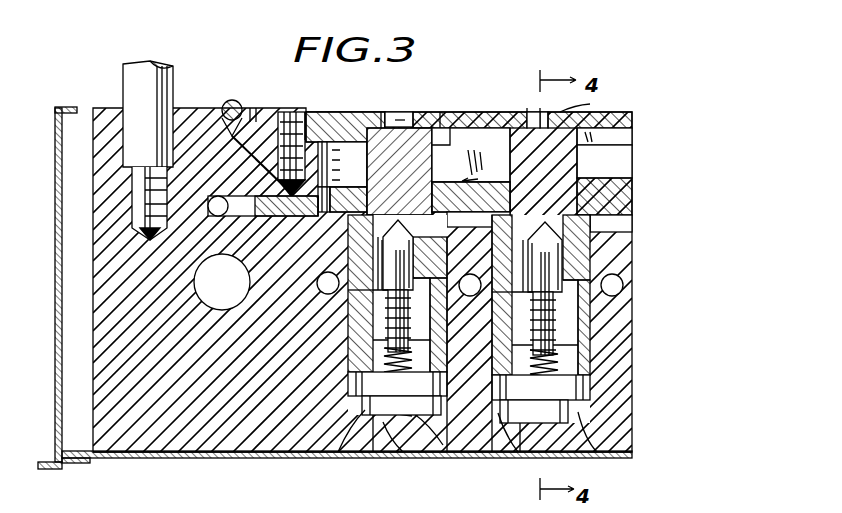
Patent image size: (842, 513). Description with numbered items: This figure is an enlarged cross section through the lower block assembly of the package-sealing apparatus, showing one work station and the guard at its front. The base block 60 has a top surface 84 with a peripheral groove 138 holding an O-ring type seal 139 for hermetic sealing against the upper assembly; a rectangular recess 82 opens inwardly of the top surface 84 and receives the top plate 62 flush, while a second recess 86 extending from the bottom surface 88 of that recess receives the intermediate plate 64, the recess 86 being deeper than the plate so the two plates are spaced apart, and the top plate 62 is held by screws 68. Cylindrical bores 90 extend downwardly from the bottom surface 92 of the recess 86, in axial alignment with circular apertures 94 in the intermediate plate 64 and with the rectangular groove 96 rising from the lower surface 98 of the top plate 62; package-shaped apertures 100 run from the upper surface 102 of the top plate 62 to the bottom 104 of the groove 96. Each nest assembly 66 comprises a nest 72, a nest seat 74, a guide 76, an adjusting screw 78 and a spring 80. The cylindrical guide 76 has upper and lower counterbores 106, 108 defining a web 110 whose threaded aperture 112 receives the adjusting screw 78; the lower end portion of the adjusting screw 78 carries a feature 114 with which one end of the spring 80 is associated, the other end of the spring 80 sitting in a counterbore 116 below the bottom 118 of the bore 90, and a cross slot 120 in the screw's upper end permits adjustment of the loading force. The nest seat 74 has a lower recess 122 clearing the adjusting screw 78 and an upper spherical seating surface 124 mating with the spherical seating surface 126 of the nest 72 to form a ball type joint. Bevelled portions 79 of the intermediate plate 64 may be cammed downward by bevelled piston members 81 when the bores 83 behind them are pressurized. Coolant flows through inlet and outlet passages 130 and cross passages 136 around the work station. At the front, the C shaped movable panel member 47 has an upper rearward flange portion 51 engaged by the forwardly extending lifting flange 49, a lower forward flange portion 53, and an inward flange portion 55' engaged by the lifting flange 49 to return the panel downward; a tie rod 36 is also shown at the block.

The tie rod 36 is at (134, 96).
The movable panel member 47 is at (56, 288).
The lifting flange 49 is at (156, 459).
The flange portion 51 is at (72, 114).
The flange portion 53 is at (44, 470).
The flange portion 55' is at (94, 480).
The base block 60 is at (280, 455).
The top plate 62 is at (310, 114).
The intermediate plate 64 is at (633, 190).
The nest assembly 66 is at (483, 177).
The screw 68 is at (288, 112).
The nest 72 is at (402, 118).
The nest seat 74 is at (330, 176).
The guide 76 is at (446, 380).
The adjusting screw 78 is at (446, 331).
The bevelled portion 79 is at (366, 196).
The spring 80 is at (446, 453).
The bevelled piston member 81 is at (266, 218).
The recess 82 is at (272, 108).
The bore 83 is at (224, 217).
The top surface 84 is at (192, 108).
The second recess 86 is at (326, 125).
The bottom surface 88 is at (266, 152).
The bore 90 is at (345, 453).
The bottom surface 92 is at (305, 226).
The aperture 94 is at (440, 192).
The groove 96 is at (372, 115).
The lower surface 98 is at (467, 115).
The aperture 100 is at (443, 112).
The upper surface 102 is at (636, 118).
The bottom 104 is at (520, 110).
The counterbore 106 is at (363, 263).
The counterbore 108 is at (352, 381).
The web 110 is at (360, 310).
The threaded aperture 112 is at (352, 346).
The valve stem 114 is at (412, 348).
The counterbore 116 is at (415, 453).
The bottom 118 is at (373, 453).
The cross slot 120 is at (392, 233).
The recess 122 is at (399, 224).
The seating surface 124 is at (438, 176).
The seating surface 126 is at (402, 112).
The inlet and outlet passages 130 is at (208, 306).
The cross passage 136 is at (318, 290).
The groove 138 is at (226, 124).
The O-ring type seal 139 is at (231, 100).